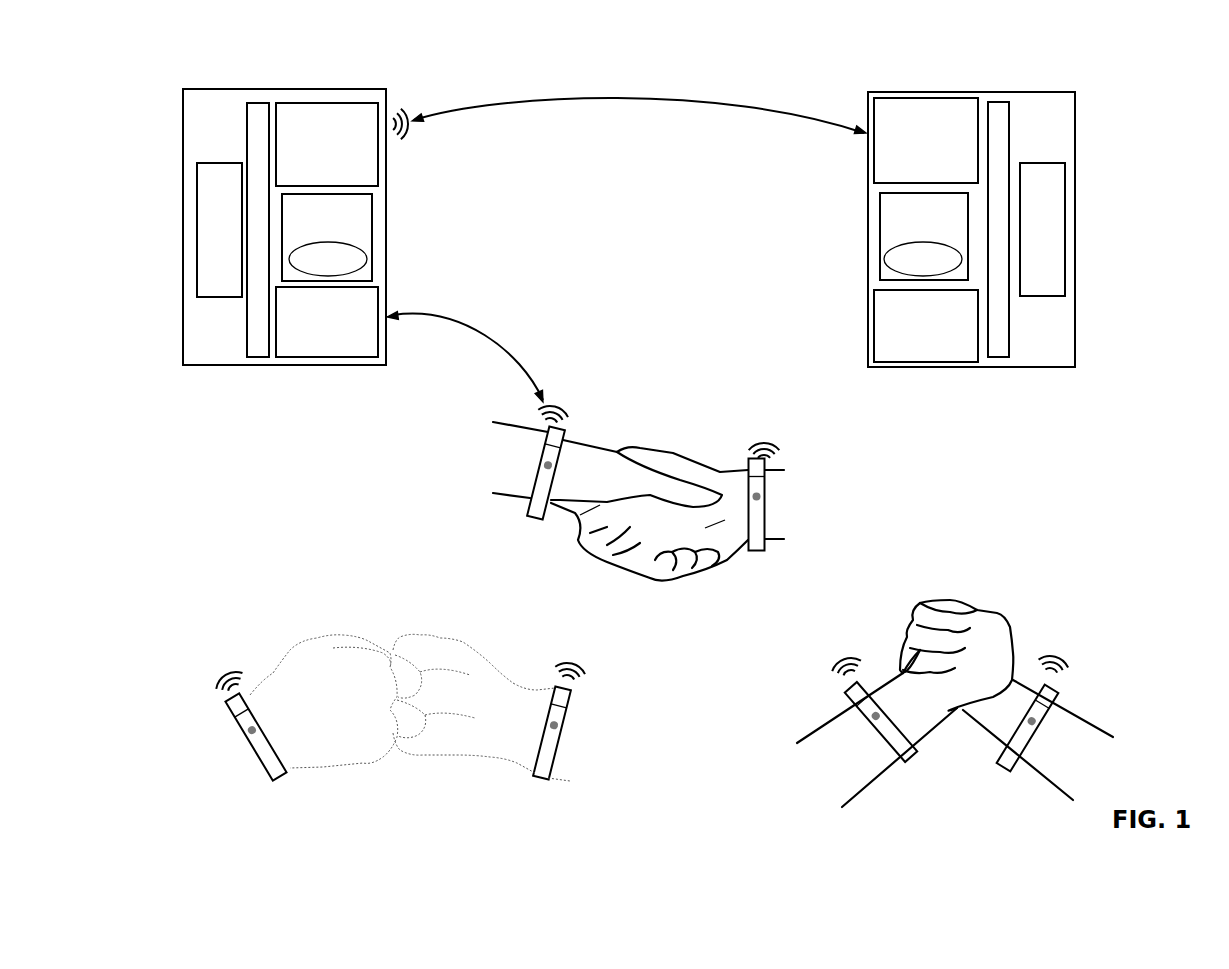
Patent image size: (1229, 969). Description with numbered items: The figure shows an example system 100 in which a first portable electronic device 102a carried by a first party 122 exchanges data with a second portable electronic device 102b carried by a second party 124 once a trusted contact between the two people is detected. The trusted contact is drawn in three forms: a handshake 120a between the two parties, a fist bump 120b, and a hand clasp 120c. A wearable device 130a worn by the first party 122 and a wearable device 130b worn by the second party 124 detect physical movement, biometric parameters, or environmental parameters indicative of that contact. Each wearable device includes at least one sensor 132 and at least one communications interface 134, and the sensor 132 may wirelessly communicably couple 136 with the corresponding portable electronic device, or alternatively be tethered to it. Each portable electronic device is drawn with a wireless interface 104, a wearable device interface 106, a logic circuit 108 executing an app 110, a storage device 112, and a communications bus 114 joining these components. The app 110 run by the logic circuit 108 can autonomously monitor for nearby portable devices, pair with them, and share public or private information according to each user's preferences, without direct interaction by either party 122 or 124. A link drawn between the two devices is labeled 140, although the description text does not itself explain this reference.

The system 100 is at (1099, 82).
The first portable electronic device 102a is at (311, 370).
The second portable electronic device 102b is at (964, 373).
The wireless interface 104 is at (627, 142).
The wearable device interface 106 is at (627, 324).
The logic circuit 108 is at (625, 237).
The app 110 is at (625, 259).
The storage device 112 is at (631, 230).
The communications bus 114 is at (628, 229).
The trusted contact in the form of a handshake 120a is at (678, 444).
The fist bump 120b is at (402, 633).
The hand clasp 120c is at (1005, 604).
The first party 122 is at (590, 512).
The second party 124 is at (717, 527).
The wearable device 130a is at (528, 492).
The wearable device 130b is at (770, 512).
The sensor 132 is at (532, 457).
The communications interface 134 is at (566, 434).
The wireless communicable coupling 136 is at (555, 402).
The wireless communication link 140 is at (408, 134).